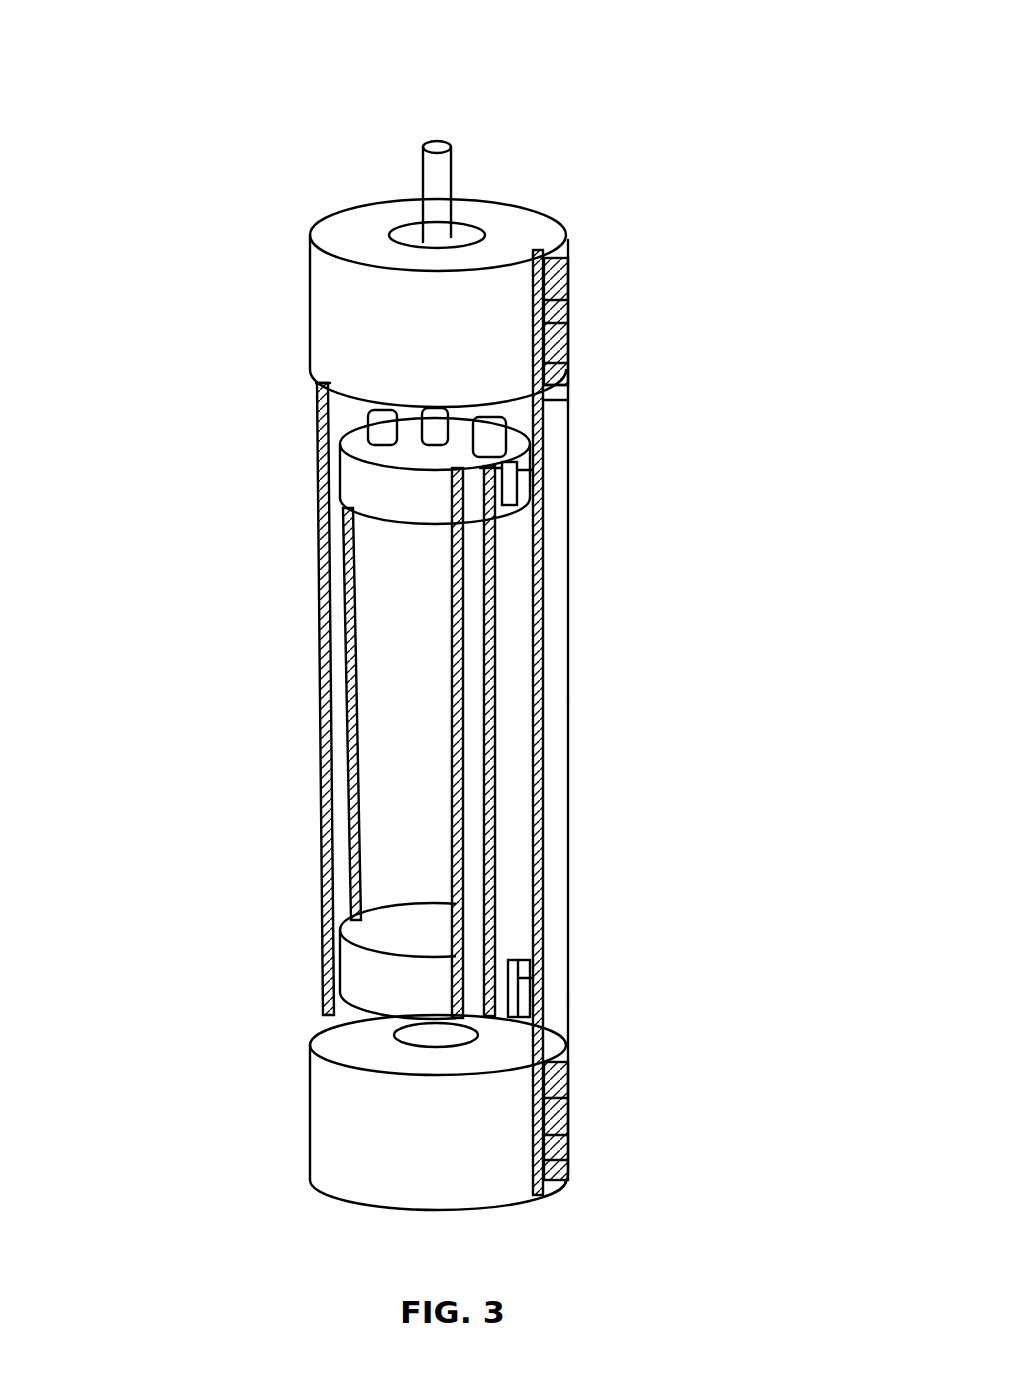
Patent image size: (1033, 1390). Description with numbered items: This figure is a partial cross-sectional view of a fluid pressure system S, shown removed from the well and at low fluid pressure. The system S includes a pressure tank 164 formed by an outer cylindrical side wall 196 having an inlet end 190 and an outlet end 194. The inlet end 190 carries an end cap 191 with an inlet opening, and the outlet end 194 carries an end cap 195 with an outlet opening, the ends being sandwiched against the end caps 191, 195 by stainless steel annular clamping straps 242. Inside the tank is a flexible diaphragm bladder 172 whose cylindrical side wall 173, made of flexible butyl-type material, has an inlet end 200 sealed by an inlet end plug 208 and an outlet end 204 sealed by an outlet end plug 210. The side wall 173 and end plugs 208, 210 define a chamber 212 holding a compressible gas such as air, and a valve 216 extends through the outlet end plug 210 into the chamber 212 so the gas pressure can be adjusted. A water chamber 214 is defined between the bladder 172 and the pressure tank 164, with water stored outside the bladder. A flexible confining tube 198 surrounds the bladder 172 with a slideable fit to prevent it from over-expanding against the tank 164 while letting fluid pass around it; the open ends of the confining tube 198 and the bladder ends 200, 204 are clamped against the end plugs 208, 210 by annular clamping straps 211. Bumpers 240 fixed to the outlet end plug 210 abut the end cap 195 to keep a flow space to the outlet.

The valve 216 is at (453, 163).
The end cap 195 is at (530, 223).
The outlet end 194 is at (569, 238).
The annular clamping straps 242 is at (570, 325).
The outlet end 204 is at (569, 393).
The annular clamping straps 211 is at (540, 463).
The cylindrical side wall 173 is at (468, 556).
The outer cylindrical side wall 196 is at (564, 583).
The confining tube 198 is at (522, 732).
The flexible diaphragm bladder 172 is at (484, 807).
The pressure tank 164 is at (558, 827).
The inlet end 200 is at (550, 1030).
The inlet end 190 is at (569, 1180).
The end cap 191 is at (322, 1190).
The inlet end plug 208 is at (370, 975).
The fluid pressure system S is at (317, 795).
The chamber 212 is at (390, 625).
The outlet end plug 210 is at (363, 479).
The bumpers 240 is at (366, 427).
The water chamber 214 is at (342, 412).